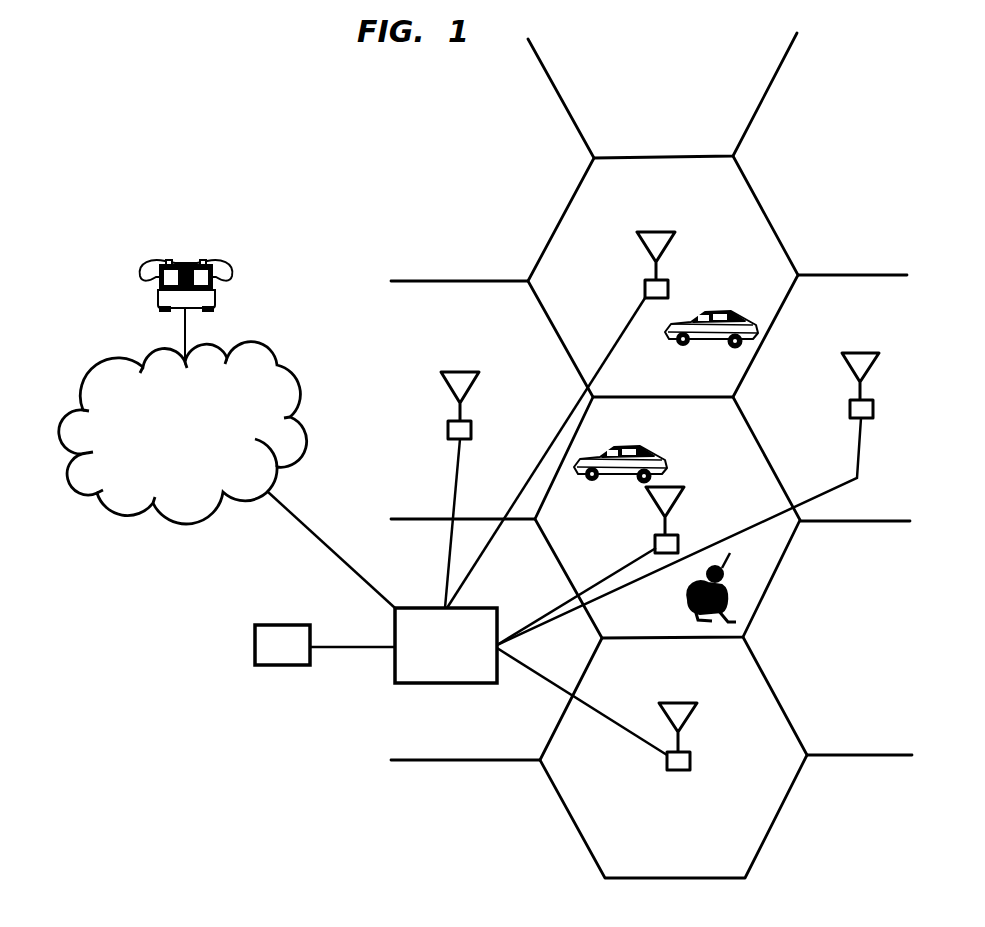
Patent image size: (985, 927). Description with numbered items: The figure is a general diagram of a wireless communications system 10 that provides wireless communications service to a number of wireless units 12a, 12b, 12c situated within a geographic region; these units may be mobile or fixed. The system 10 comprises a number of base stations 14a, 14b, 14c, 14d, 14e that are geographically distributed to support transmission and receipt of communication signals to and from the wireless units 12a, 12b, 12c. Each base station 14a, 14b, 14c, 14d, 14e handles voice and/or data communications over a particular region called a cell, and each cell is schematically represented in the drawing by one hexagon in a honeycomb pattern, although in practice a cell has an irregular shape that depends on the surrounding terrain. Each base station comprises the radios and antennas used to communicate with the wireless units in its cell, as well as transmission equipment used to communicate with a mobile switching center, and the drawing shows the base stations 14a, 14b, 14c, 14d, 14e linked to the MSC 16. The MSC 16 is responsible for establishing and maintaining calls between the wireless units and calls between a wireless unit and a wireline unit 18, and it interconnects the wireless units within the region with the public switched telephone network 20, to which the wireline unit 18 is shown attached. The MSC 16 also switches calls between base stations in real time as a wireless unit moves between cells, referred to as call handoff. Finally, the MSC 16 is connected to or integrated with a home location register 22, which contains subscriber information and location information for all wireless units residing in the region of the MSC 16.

The wireless communications system 10 is at (428, 125).
The wireless unit 12a is at (727, 315).
The wireless unit 12b is at (627, 445).
The wireless unit 12c is at (727, 622).
The base station 14a is at (470, 388).
The base station 14b is at (667, 247).
The base station 14c is at (675, 510).
The base station 14d is at (692, 762).
The base station 14e is at (873, 410).
The mobile switching center 16 is at (418, 608).
The wireline unit 18 is at (182, 257).
The public switched telephone network 20 is at (277, 347).
The home location register 22 is at (273, 624).